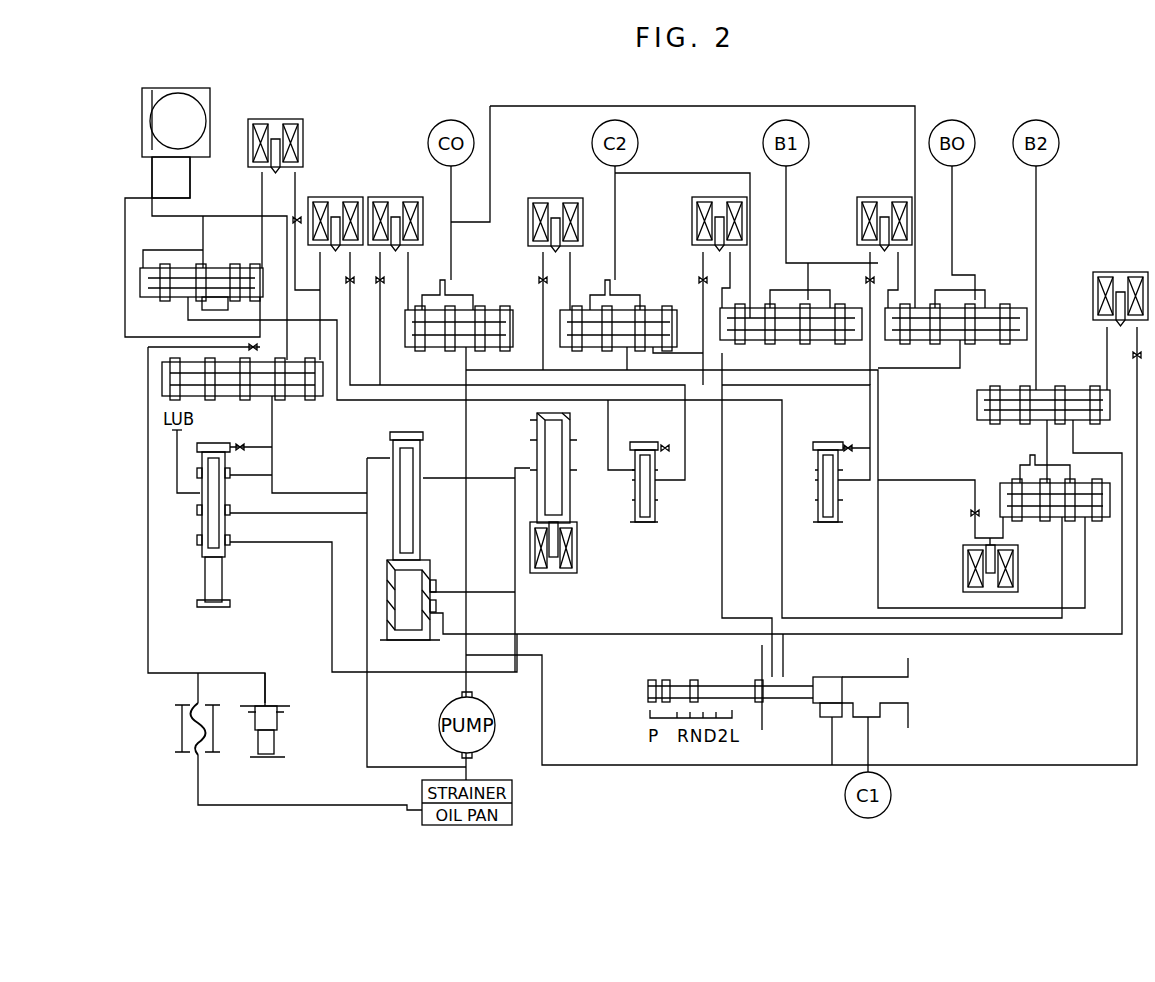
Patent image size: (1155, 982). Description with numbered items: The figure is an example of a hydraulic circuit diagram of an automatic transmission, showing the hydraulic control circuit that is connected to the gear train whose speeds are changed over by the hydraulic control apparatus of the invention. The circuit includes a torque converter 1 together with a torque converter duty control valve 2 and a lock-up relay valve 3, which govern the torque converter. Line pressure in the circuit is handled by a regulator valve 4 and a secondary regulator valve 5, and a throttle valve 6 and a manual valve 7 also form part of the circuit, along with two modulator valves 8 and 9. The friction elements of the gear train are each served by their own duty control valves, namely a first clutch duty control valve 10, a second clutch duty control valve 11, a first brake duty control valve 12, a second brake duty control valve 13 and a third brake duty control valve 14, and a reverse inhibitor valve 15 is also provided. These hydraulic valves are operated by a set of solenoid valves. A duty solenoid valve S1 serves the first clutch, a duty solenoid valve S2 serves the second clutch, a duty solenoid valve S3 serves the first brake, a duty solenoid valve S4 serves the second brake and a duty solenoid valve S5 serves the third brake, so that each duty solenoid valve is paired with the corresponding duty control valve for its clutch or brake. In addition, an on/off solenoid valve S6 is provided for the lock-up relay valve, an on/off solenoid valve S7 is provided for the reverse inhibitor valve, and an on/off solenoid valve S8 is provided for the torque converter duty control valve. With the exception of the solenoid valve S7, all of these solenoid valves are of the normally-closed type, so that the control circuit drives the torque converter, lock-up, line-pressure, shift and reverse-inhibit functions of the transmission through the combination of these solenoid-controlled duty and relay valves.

The torque converter 1 is at (204, 110).
The torque converter duty control valve 2 is at (210, 272).
The lock-up relay valve 3 is at (236, 397).
The regulator valve 4 is at (424, 528).
The secondary regulator valve 5 is at (198, 525).
The throttle valve 6 is at (577, 492).
The manual valve 7 is at (830, 677).
The modulator valve 8 is at (658, 503).
The modulator valve 9 is at (813, 503).
The C0 duty control valve 10 is at (450, 320).
The C2 duty control valve 11 is at (560, 342).
The B1 duty control valve 12 is at (778, 342).
The B0 duty control valve 13 is at (997, 308).
The B2 duty control valve 14 is at (1000, 488).
The reverse inhibitor valve 15 is at (1068, 388).
The duty solenoid valve for C0 S1 is at (390, 197).
The duty solenoid valve for C2 S2 is at (551, 198).
The duty solenoid valve for B1 S3 is at (692, 199).
The duty solenoid valve for B0 S4 is at (880, 197).
The duty solenoid valve for B2 S5 is at (968, 592).
The on/off solenoid valve for the lock-up relay valve S6 is at (334, 197).
The on/off solenoid valve for the reverse inhibitor valve S7 is at (1116, 272).
The on/off solenoid valve for the torque converter duty control valve S8 is at (286, 119).